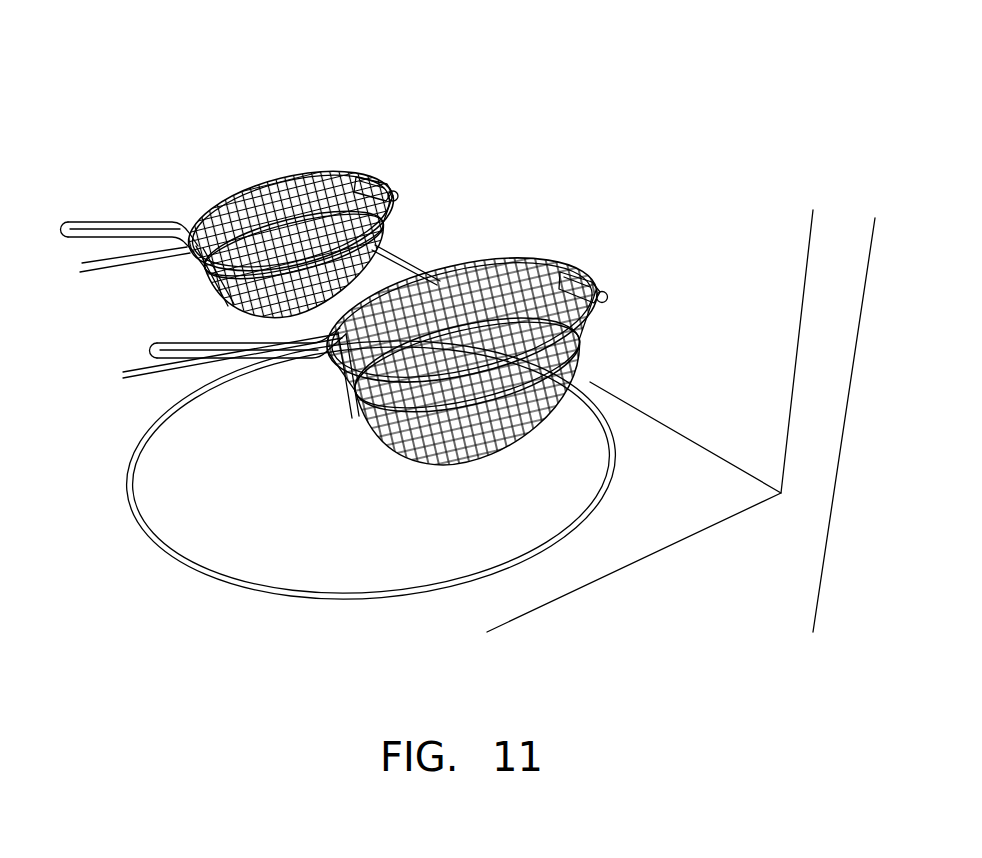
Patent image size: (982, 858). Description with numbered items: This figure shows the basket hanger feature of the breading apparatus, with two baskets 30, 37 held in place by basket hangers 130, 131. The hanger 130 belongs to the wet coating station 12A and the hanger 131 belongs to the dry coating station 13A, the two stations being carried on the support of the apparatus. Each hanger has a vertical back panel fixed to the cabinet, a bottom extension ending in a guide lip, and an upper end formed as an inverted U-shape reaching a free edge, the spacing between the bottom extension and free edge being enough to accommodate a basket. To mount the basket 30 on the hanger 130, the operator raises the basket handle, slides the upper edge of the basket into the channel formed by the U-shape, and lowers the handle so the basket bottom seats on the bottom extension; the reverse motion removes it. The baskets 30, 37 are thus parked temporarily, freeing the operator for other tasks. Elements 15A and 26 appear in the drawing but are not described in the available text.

The dry coating station 13A is at (274, 175).
The basket hanger 131 is at (392, 180).
The basket 37 is at (228, 190).
The basket 30 is at (152, 347).
The wet coating station 12A is at (389, 301).
The basket hanger 130 is at (598, 283).
The wall 15A is at (723, 337).
The ring 26 is at (252, 494).